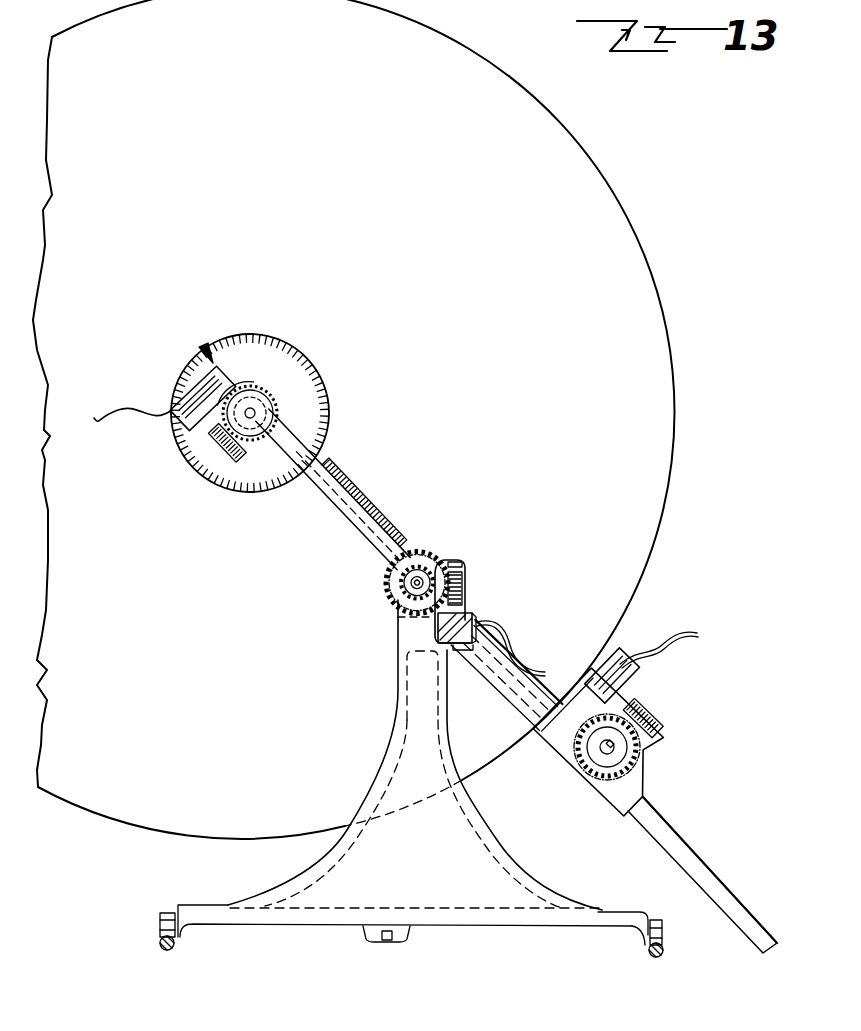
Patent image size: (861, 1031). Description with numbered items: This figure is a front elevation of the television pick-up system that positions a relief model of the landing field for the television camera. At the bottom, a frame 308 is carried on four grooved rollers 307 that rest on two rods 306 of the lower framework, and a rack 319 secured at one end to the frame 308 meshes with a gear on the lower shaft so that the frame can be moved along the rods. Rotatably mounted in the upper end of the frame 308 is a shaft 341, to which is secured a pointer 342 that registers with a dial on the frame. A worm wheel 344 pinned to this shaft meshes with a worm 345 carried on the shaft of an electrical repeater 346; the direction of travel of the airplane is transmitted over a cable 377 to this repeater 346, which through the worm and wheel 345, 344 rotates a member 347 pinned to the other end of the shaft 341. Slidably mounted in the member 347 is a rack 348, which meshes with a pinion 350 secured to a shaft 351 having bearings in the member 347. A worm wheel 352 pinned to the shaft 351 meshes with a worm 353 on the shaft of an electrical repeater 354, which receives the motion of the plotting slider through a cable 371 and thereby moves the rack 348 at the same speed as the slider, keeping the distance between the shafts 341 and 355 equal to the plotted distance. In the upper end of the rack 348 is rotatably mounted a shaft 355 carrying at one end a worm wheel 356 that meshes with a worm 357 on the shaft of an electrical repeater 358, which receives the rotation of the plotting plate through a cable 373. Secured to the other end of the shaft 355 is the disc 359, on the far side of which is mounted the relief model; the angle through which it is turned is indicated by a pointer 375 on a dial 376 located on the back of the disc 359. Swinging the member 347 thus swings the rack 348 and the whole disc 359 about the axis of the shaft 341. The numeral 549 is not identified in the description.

The disc 359 is at (617, 208).
The frame 308 is at (368, 789).
The grooved rollers 307 is at (165, 912).
The rods 306 is at (163, 950).
The rack 319 is at (387, 942).
The rack 348 is at (358, 512).
The dial 376 is at (317, 393).
The shaft 355 is at (257, 413).
The worm wheel 356 is at (258, 492).
The electrical repeater 358 is at (180, 394).
The cable 373 is at (160, 424).
The worm 357 is at (213, 455).
The pointer 375 is at (202, 351).
The worm wheel 344 is at (421, 550).
The pointer 342 is at (414, 582).
The shaft 341 is at (413, 589).
The worm 345 is at (465, 583).
The electrical repeater 346 is at (466, 626).
The cable 377 is at (507, 634).
The member 347 is at (516, 712).
The pinion 350 is at (648, 768).
The shaft 351 is at (600, 749).
The worm wheel 352 is at (640, 765).
The worm 353 is at (650, 726).
The electrical repeater 354 is at (632, 686).
The cable 371 is at (650, 648).
The housing corner 549 is at (624, 818).